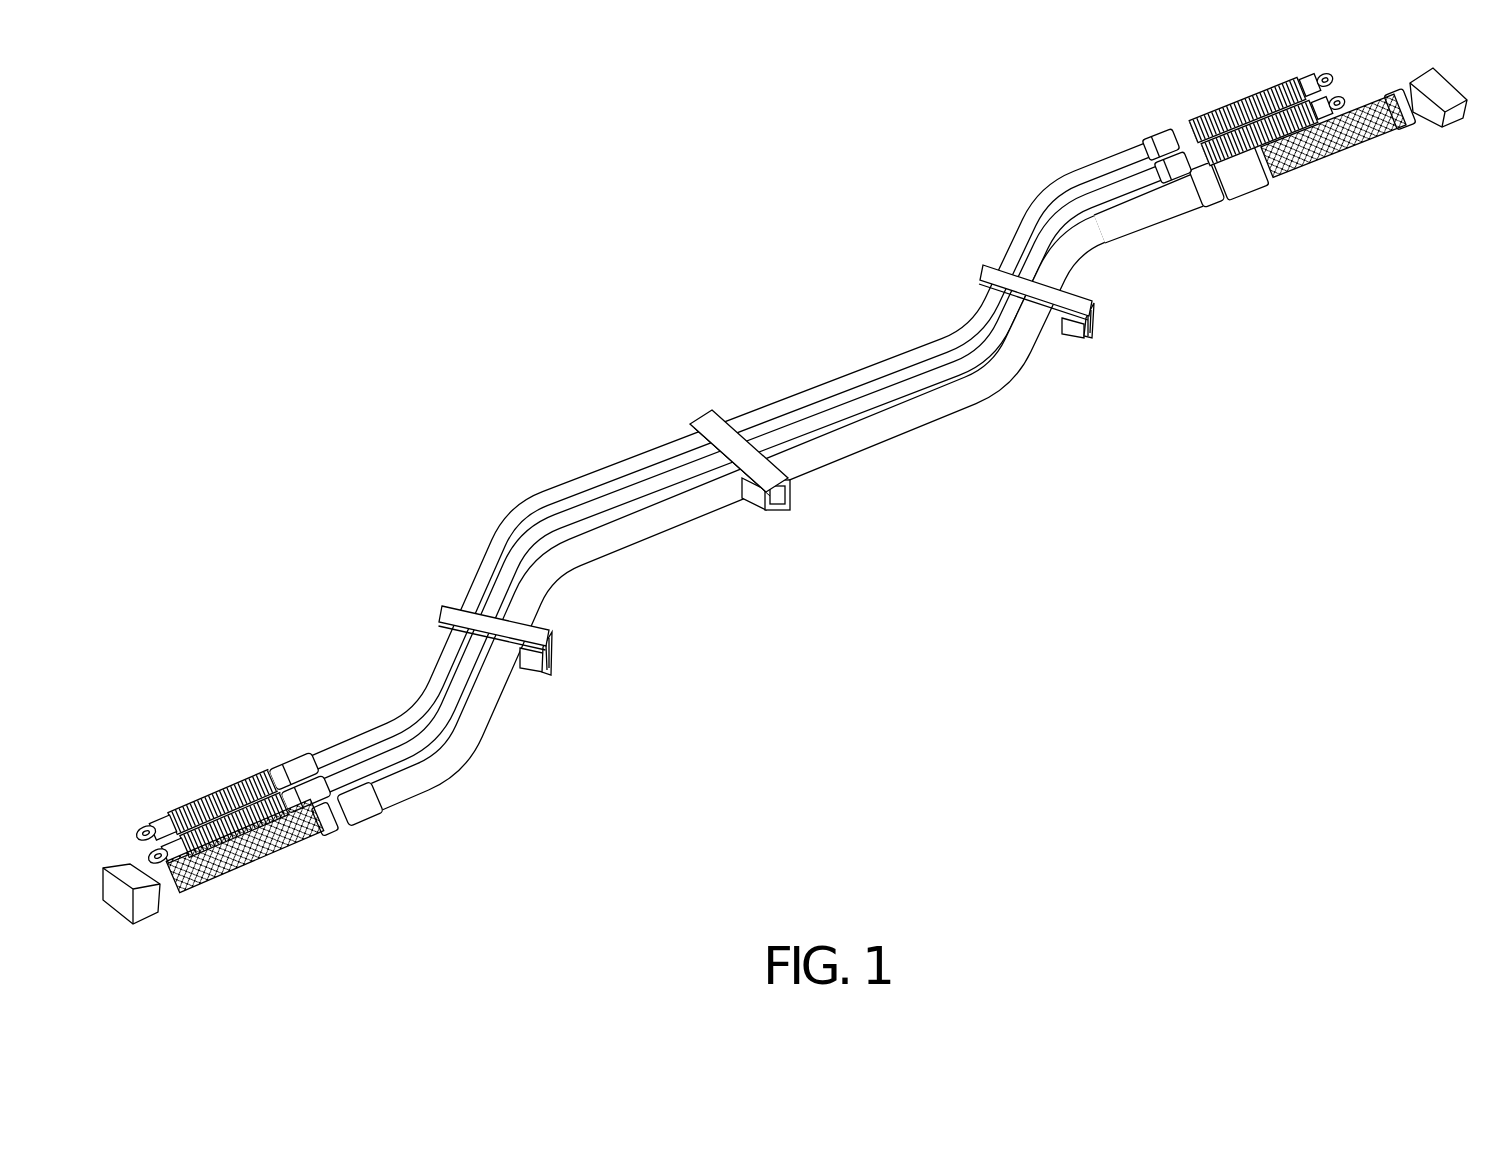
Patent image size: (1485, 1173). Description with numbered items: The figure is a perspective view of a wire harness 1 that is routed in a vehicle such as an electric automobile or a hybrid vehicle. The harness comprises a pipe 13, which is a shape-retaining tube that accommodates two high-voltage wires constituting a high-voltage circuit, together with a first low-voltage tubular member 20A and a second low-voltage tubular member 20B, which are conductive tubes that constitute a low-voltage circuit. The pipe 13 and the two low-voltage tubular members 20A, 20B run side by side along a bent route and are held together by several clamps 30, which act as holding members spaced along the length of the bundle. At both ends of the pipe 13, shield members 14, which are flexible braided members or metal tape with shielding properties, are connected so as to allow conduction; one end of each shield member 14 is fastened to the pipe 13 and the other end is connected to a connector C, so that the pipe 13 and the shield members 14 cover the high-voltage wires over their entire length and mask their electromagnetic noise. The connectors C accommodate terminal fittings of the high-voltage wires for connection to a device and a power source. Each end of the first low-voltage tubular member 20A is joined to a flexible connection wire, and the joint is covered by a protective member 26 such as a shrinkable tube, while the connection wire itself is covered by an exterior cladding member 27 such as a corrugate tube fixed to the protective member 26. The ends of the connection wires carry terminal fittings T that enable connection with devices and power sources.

The wire harness 1 is at (461, 306).
The pipe 13 is at (937, 412).
The shield member 14 is at (258, 852).
The first low-voltage tubular member 20A is at (838, 383).
The second low-voltage tubular member 20B is at (910, 372).
The protective member 26 is at (278, 773).
The exterior cladding member 27 is at (202, 796).
The clamp 30 is at (540, 657).
The terminal fitting T is at (146, 822).
The connector C is at (155, 893).